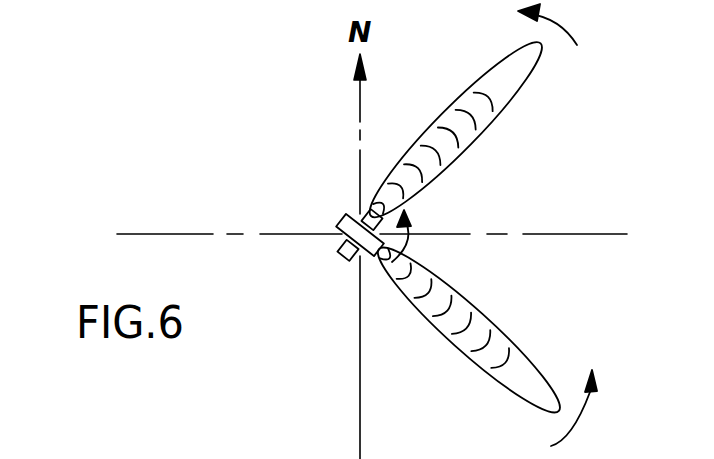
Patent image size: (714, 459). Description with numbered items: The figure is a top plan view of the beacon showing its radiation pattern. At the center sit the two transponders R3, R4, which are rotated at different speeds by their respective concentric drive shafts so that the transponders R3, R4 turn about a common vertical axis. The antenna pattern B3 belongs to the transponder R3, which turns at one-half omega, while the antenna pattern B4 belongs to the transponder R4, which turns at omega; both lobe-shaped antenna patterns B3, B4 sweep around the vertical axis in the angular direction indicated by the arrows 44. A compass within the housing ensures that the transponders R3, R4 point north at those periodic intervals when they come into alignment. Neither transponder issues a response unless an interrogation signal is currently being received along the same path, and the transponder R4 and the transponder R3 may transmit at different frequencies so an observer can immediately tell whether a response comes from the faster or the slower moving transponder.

The arrows 44 is at (560, 22).
The antenna pattern B3 is at (482, 393).
The antenna pattern B4 is at (536, 70).
The transponder R3 is at (341, 217).
The transponder R4 is at (342, 250).